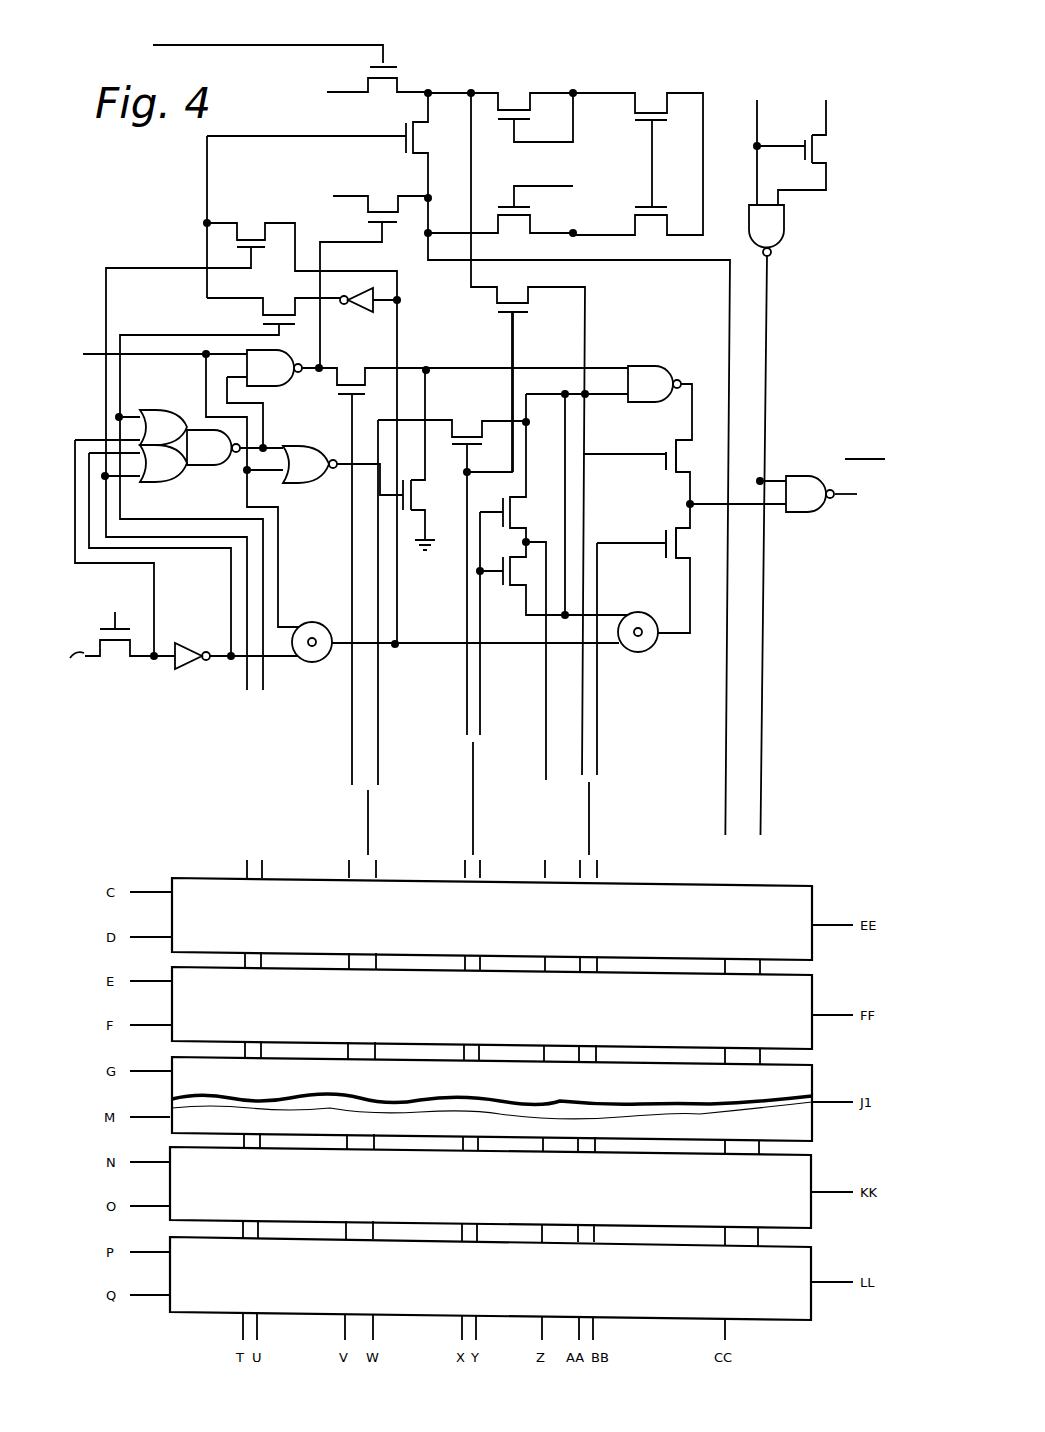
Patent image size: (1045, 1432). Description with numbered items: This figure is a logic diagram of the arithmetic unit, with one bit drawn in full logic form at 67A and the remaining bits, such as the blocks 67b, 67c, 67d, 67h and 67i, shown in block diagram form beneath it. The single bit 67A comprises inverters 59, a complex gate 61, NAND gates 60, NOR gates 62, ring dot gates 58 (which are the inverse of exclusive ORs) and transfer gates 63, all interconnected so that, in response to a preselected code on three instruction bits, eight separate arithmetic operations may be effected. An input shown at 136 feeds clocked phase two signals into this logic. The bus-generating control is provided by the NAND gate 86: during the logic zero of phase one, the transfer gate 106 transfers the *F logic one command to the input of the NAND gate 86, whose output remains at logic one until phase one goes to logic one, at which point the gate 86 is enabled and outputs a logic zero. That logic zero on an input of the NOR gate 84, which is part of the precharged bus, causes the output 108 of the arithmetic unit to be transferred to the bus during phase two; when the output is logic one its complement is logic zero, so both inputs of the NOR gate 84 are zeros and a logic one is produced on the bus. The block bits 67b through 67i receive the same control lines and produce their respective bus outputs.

The one bit of the arithmetic unit 67A is at (184, 192).
The transfer gate 106 is at (822, 147).
The NAND gate 86 is at (773, 224).
The inverters 59 is at (360, 306).
The NAND gates 60 is at (275, 373).
The complex gate 61 is at (167, 418).
The NOR gates 62 is at (311, 478).
The transfer gates 63 is at (493, 309).
The ring dot gates 58 is at (317, 628).
The output of the arithmetic unit 108 is at (713, 505).
The NOR gate 84 is at (800, 515).
The clock input transistor 136 is at (88, 650).
The arithmetic unit bit 67b is at (492, 919).
The arithmetic unit bit 67c is at (492, 1008).
The arithmetic unit bit 67d is at (492, 1099).
The arithmetic unit bit 67h is at (490, 1187).
The arithmetic unit bit 67i is at (490, 1278).